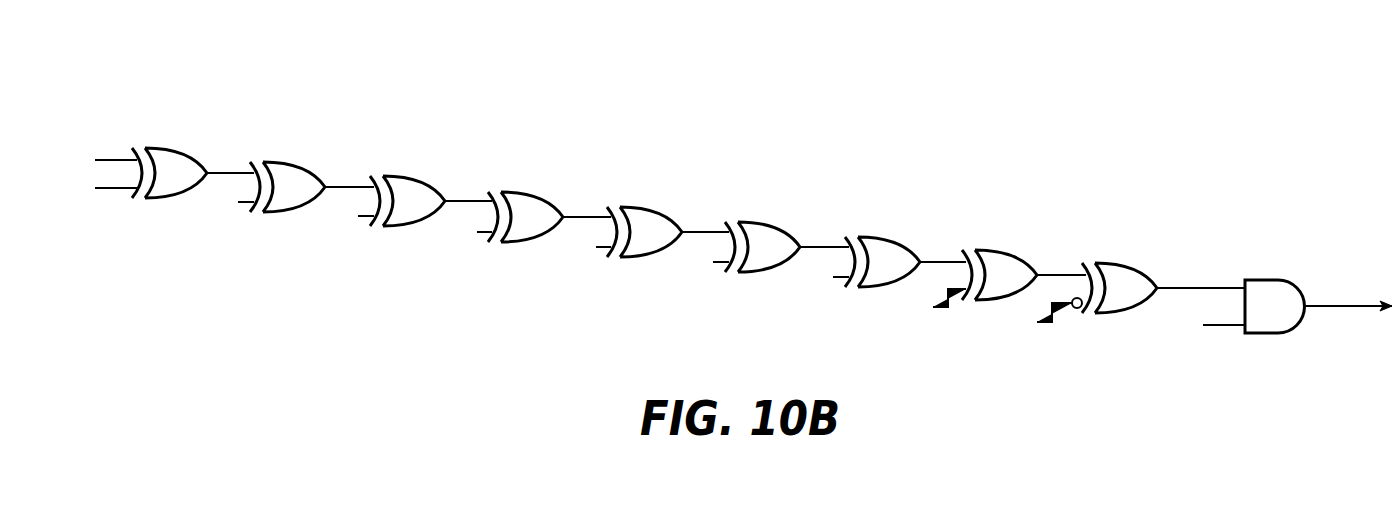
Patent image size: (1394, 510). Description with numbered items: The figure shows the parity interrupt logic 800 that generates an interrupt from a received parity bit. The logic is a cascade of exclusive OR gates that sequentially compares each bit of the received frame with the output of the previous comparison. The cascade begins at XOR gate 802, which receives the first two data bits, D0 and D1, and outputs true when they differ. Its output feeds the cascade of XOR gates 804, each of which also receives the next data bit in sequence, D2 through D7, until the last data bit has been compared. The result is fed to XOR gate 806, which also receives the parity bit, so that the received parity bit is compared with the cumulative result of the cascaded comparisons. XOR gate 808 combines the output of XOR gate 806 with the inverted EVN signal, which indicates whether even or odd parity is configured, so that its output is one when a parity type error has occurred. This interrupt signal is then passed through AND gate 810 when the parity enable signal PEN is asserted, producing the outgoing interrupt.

The parity checking circuit 800 is at (1090, 72).
The XOR gate 802 is at (163, 146).
The cascade of XOR gates 804 is at (930, 245).
The XOR gate 806 is at (1000, 252).
The XOR gate 808 is at (1118, 265).
The AND gate 810 is at (1268, 282).